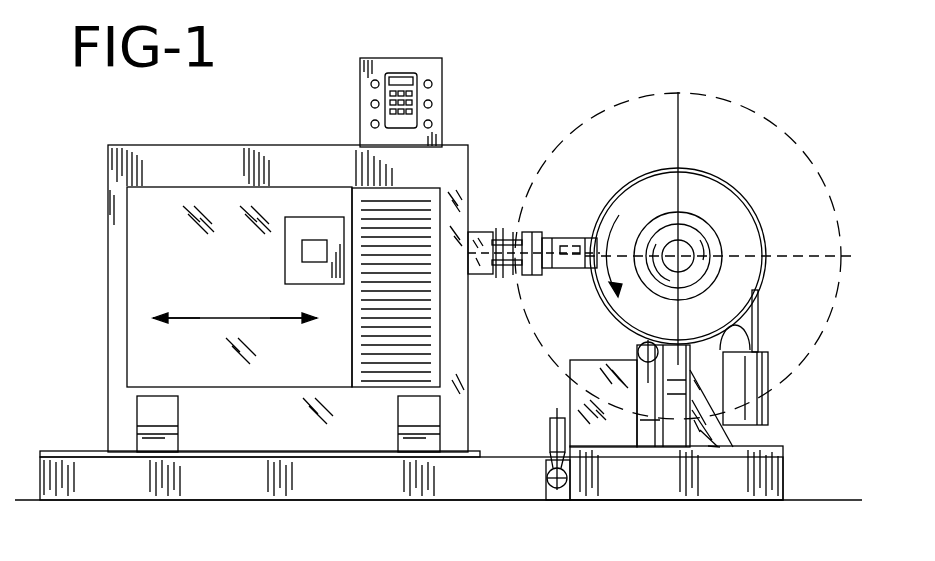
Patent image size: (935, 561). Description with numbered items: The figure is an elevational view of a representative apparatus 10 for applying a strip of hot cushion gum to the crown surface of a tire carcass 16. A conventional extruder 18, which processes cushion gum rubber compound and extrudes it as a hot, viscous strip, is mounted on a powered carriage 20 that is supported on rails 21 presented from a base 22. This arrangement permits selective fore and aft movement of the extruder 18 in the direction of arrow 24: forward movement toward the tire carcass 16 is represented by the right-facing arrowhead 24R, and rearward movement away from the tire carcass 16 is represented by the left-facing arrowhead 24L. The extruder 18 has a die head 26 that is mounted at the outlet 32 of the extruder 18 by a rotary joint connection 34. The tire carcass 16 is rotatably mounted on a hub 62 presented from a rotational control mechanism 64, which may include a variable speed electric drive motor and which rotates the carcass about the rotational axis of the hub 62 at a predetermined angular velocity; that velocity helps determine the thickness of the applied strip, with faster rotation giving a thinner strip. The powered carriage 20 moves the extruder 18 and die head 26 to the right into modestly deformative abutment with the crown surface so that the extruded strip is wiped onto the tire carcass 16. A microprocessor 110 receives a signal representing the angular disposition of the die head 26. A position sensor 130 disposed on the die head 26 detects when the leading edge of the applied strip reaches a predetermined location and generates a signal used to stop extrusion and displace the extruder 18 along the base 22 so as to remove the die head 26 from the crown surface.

The apparatus 10 is at (822, 96).
The tire carcass 16 is at (742, 202).
The extruder 18 is at (288, 165).
The powered carriage 20 is at (172, 436).
The rails 21 is at (82, 450).
The base 22 is at (125, 478).
The arrow 24 is at (232, 318).
The arrowhead 24L is at (170, 320).
The arrowhead 24R is at (296, 320).
The die head 26 is at (568, 226).
The outlet 32 is at (482, 260).
The rotary joint connection 34 is at (531, 226).
The hub 62 is at (684, 262).
The rotational control mechanism 64 is at (772, 412).
The microprocessor 110 is at (420, 70).
The position sensor 130 is at (572, 256).